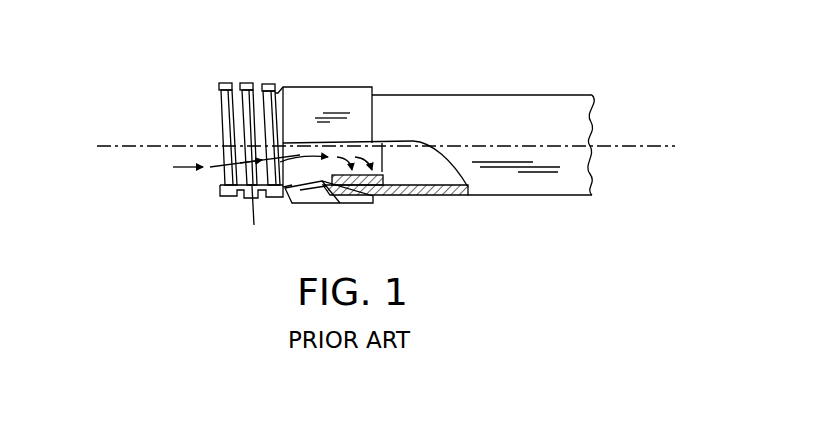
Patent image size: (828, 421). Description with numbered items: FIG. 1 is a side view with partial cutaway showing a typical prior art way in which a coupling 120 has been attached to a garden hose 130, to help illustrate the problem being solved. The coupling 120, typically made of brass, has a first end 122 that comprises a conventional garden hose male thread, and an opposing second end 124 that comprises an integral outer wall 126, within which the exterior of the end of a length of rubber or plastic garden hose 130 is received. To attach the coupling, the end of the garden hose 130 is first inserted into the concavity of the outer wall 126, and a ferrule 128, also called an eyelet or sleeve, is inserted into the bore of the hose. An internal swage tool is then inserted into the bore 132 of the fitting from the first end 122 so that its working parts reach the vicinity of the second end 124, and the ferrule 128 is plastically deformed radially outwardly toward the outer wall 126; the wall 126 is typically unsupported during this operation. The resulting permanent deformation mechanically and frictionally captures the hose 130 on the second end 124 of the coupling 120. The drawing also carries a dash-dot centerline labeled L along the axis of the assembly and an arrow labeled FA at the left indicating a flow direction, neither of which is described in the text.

The coupling 120 is at (323, 57).
The first end 122 is at (229, 129).
The second end 124 is at (363, 87).
The outer wall 126 is at (337, 204).
The ferrule 128 is at (383, 182).
The garden hose 130 is at (530, 102).
The bore 132 is at (202, 122).
The longitudinal axis L is at (120, 142).
The air flow direction FA is at (183, 174).